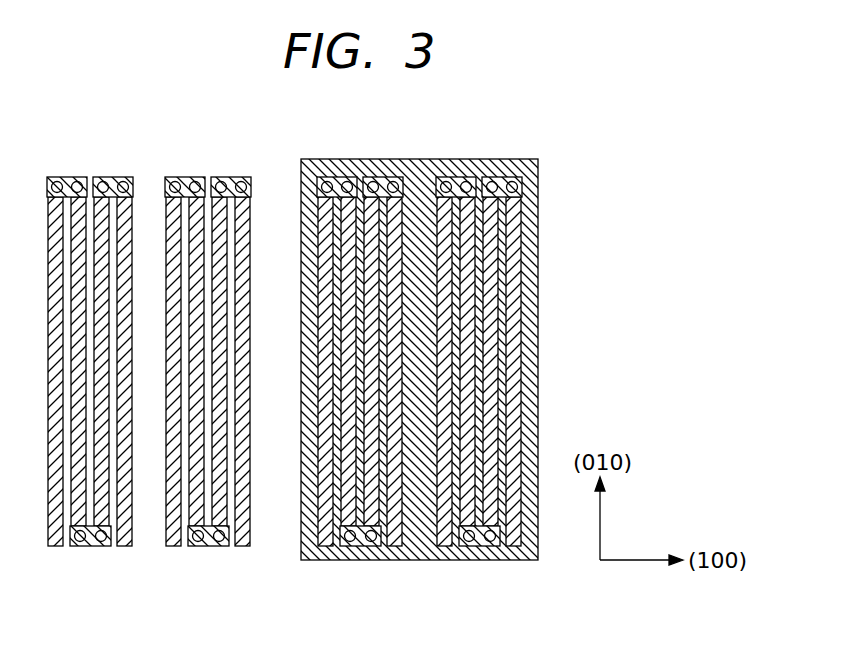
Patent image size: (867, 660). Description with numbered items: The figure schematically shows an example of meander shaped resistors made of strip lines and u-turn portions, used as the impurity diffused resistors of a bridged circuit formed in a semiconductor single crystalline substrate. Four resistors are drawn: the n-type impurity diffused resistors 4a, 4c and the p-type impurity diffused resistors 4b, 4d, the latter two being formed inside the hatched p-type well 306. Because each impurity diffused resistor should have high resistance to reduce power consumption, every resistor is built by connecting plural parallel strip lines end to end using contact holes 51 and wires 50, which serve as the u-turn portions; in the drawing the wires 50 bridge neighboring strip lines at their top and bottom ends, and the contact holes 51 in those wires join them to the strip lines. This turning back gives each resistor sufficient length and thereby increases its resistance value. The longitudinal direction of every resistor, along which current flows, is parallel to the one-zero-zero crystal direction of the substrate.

The n-type impurity diffused resistor 4a is at (143, 566).
The p-type impurity diffused resistor 4b is at (415, 566).
The n-type impurity diffused resistor 4c is at (262, 566).
The p-type impurity diffused resistor 4d is at (532, 566).
The wire 50 is at (68, 177).
The contact hole 51 is at (108, 177).
The p-type well 306 is at (538, 330).